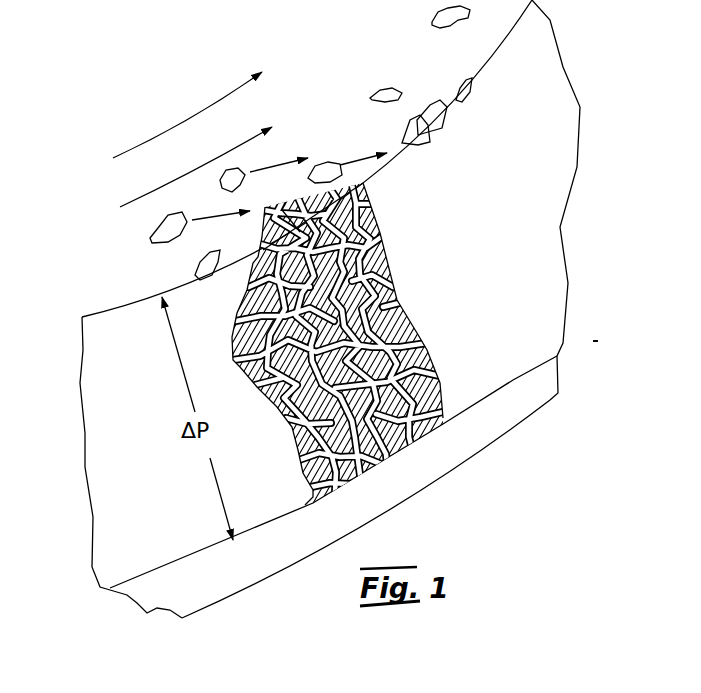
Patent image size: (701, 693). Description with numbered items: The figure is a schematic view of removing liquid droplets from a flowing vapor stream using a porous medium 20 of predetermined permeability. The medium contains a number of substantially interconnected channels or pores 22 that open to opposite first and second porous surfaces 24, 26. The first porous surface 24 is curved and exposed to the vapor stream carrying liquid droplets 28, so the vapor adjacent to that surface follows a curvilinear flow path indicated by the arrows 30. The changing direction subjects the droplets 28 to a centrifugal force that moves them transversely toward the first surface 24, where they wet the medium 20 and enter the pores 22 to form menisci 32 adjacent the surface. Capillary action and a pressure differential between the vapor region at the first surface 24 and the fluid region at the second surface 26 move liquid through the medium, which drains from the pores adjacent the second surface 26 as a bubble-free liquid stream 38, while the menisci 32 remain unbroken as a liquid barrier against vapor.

The porous medium 20 is at (513, 329).
The pores 22 is at (330, 353).
The first porous surface 24 is at (508, 40).
The second porous surface 26 is at (513, 380).
The liquid droplets 28 is at (430, 22).
The arrows 30 is at (203, 167).
The menisci 32 is at (363, 183).
The bubble-free liquid stream 38 is at (410, 457).